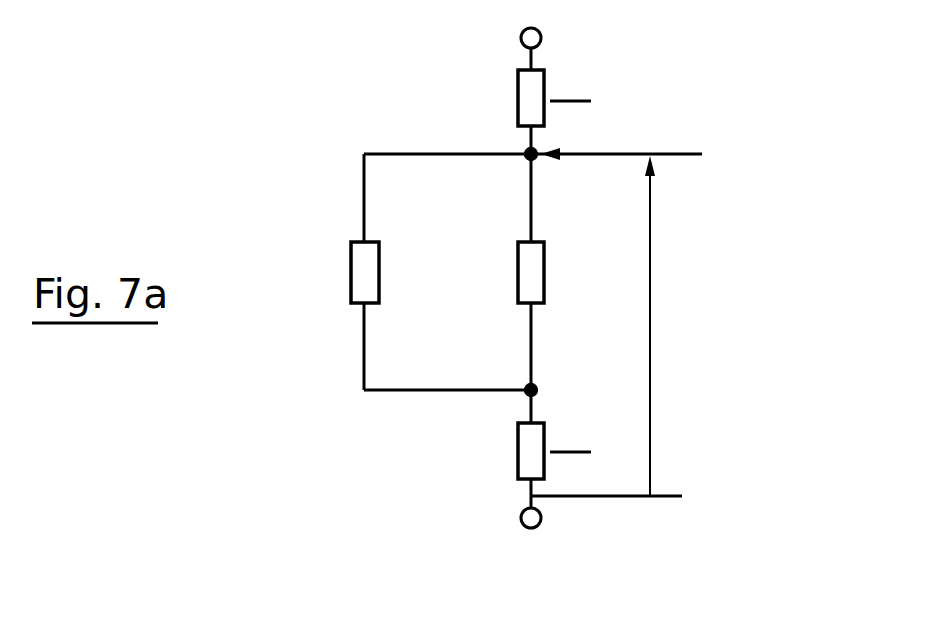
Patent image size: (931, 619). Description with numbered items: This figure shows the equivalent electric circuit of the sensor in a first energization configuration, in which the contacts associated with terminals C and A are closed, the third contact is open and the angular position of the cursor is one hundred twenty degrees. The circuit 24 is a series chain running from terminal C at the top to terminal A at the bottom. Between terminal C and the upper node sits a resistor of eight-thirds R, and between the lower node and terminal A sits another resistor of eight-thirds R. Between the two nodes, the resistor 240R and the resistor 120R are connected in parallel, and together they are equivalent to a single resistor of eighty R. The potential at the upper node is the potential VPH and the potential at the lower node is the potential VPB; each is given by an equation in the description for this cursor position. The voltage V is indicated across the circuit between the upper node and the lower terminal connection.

The resistive voltage divider network 24 is at (678, 154).
The contact terminal C is at (530, 35).
The contact terminal A is at (531, 521).
The potential VPH is at (513, 145).
The potential VPB is at (520, 400).
The resistor 240 R 240R is at (441, 272).
The resistor 120 R 120R is at (571, 332).
The voltage V is at (606, 326).